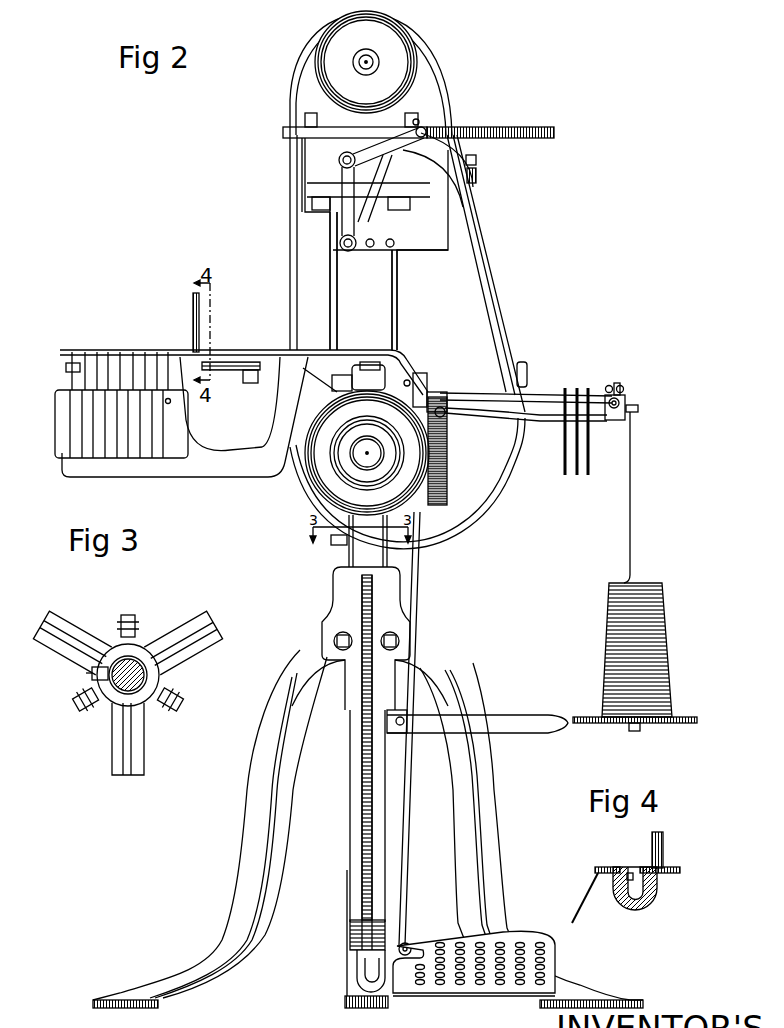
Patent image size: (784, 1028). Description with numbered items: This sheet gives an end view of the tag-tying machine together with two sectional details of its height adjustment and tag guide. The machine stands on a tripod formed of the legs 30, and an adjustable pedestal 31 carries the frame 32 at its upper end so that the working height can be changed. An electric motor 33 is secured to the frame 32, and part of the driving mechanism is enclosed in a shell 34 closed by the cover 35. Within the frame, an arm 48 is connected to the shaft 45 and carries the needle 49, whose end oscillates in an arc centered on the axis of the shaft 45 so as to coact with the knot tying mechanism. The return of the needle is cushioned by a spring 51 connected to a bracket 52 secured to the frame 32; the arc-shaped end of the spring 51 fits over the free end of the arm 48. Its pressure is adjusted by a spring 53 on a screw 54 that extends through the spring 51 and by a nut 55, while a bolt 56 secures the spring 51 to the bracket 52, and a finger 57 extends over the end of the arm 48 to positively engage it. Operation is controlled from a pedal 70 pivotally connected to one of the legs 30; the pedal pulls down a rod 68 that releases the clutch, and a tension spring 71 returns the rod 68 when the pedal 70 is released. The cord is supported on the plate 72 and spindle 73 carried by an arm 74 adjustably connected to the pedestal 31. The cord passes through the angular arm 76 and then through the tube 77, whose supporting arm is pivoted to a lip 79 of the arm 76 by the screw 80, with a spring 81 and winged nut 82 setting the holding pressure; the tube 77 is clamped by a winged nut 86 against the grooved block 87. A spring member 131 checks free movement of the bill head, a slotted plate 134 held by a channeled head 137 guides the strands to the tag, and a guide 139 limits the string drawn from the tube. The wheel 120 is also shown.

In FIG. 2, the legs 30 is at (255, 792).
In FIG. 3, the legs 30 is at (53, 632).
In FIG. 2, the adjustable pedestal 31 is at (383, 560).
In FIG. 3, the adjustable pedestal 31 is at (127, 753).
In FIG. 2, the frame 32 is at (385, 295).
In FIG. 2, the electric motor 33 is at (385, 53).
In FIG. 2, the shell 34 is at (470, 315).
In FIG. 2, the cover 35 is at (498, 273).
In FIG. 2, the shaft 45 is at (345, 247).
In FIG. 2, the arm 48 is at (345, 212).
In FIG. 2, the needle 49 is at (462, 162).
In FIG. 2, the spring 51 is at (394, 162).
In FIG. 2, the bracket 52 is at (427, 237).
In FIG. 2, the spring 53 is at (430, 132).
In FIG. 2, the screw 54 is at (423, 130).
In FIG. 2, the nut 55 is at (418, 123).
In FIG. 2, the bolt 56 is at (455, 180).
In FIG. 2, the finger 57 is at (340, 158).
In FIG. 2, the rod 68 is at (420, 602).
In FIG. 2, the pedal 70 is at (513, 940).
In FIG. 2, the spring 71 is at (448, 452).
In FIG. 2, the plate 72 is at (690, 715).
In FIG. 2, the spindle 73 is at (632, 583).
In FIG. 2, the arm 74 is at (535, 722).
In FIG. 2, the angular arm 76 is at (554, 410).
In FIG. 2, the tube 77 is at (546, 392).
In FIG. 2, the lip 79 is at (633, 418).
In FIG. 2, the screw 80 is at (617, 383).
In FIG. 2, the spring 81 is at (626, 390).
In FIG. 2, the winged nut 82 is at (623, 387).
In FIG. 2, the winged nut 86 is at (613, 408).
In FIG. 2, the block 87 is at (625, 402).
In FIG. 2, the wheel 120 is at (345, 420).
In FIG. 2, the spring member 131 is at (387, 372).
In FIG. 2, the slotted plate 134 is at (77, 350).
In FIG. 4, the slotted plate 134 is at (610, 868).
In FIG. 2, the channeled head 137 is at (230, 357).
In FIG. 4, the channeled head 137 is at (639, 907).
In FIG. 2, the stop plate or pin or guide 139 is at (195, 313).
In FIG. 4, the stop plate or pin or guide 139 is at (665, 845).